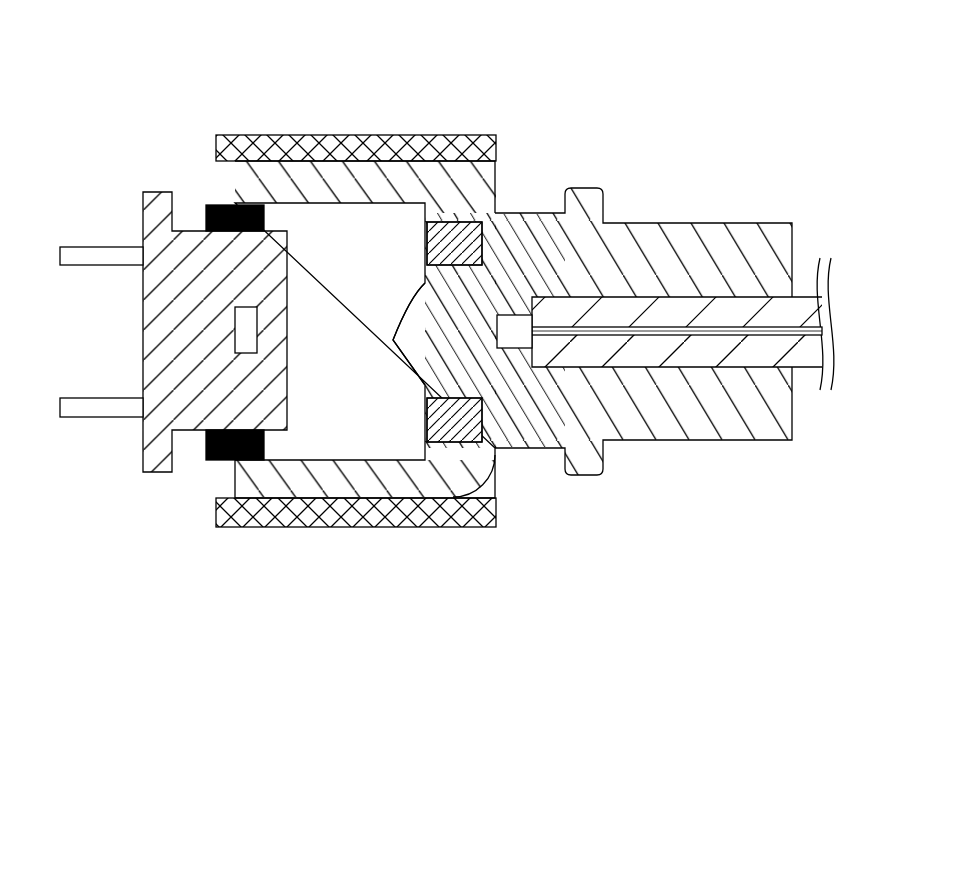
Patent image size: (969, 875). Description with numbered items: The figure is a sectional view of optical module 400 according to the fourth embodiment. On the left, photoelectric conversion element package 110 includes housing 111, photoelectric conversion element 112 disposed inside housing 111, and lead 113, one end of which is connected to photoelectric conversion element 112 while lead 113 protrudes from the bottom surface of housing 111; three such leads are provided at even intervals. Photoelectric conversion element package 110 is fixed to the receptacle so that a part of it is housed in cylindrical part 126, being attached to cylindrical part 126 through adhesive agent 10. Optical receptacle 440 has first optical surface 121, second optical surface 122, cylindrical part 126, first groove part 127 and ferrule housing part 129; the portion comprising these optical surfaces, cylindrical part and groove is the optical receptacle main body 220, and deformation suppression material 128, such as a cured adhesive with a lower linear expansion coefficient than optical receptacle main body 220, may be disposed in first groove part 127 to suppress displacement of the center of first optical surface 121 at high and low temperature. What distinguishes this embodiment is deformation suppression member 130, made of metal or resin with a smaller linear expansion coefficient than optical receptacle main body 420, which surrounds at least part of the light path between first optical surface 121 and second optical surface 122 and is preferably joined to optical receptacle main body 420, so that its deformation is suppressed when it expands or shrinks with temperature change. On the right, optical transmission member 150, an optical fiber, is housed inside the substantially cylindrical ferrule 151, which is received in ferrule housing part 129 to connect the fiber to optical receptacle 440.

The optical module 400 is at (688, 88).
The photoelectric conversion element package 110 is at (158, 140).
The adhesive agent 10 is at (202, 348).
The housing 111 is at (183, 412).
The photoelectric conversion element 112 is at (248, 330).
The lead 113 is at (93, 405).
The first optical surface 121 is at (393, 340).
The second optical surface 122 is at (500, 327).
The cylindrical part 126 is at (327, 172).
The first groove part 127 is at (438, 228).
The deformation suppression material 128 is at (468, 203).
The ferrule housing part 129 is at (585, 343).
The deformation suppression member 130 is at (440, 522).
The optical transmission member 150 is at (683, 391).
The ferrule 151 is at (723, 343).
The optical receptacle main body 220 is at (410, 266).
The optical receptacle main body 420 is at (500, 243).
The optical receptacle 440 is at (664, 341).